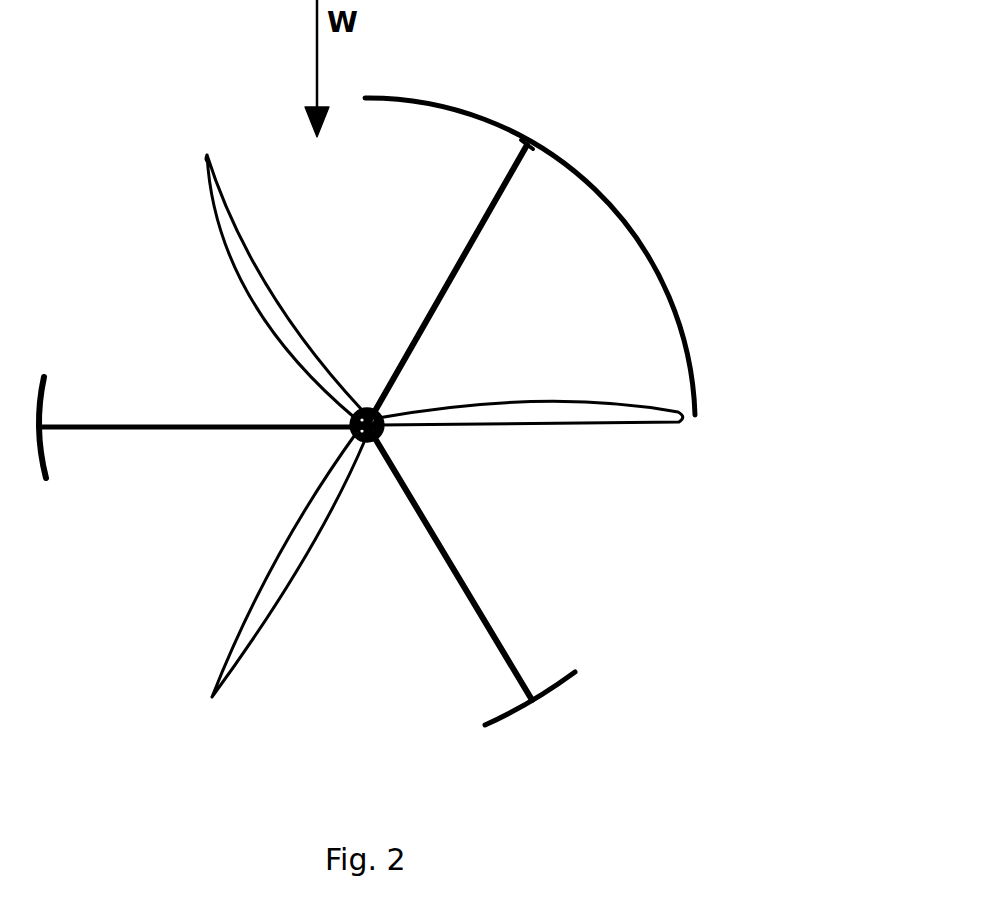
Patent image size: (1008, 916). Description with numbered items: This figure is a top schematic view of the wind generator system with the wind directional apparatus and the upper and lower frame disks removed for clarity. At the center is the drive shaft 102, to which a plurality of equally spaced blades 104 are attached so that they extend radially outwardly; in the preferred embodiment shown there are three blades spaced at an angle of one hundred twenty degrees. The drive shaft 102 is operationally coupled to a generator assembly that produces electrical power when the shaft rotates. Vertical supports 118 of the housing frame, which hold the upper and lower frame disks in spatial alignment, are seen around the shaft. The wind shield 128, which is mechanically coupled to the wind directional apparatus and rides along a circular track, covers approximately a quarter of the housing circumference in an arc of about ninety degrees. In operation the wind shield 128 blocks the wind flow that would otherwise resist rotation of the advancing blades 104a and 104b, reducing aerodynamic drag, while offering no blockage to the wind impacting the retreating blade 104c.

The drive shaft 102 is at (378, 436).
The blades 104 is at (532, 446).
The advancing blade 104a is at (623, 423).
The advancing blade 104b is at (253, 660).
The retreating blade 104c is at (260, 240).
The vertical supports 118 is at (543, 702).
The wind shield 128 is at (580, 173).